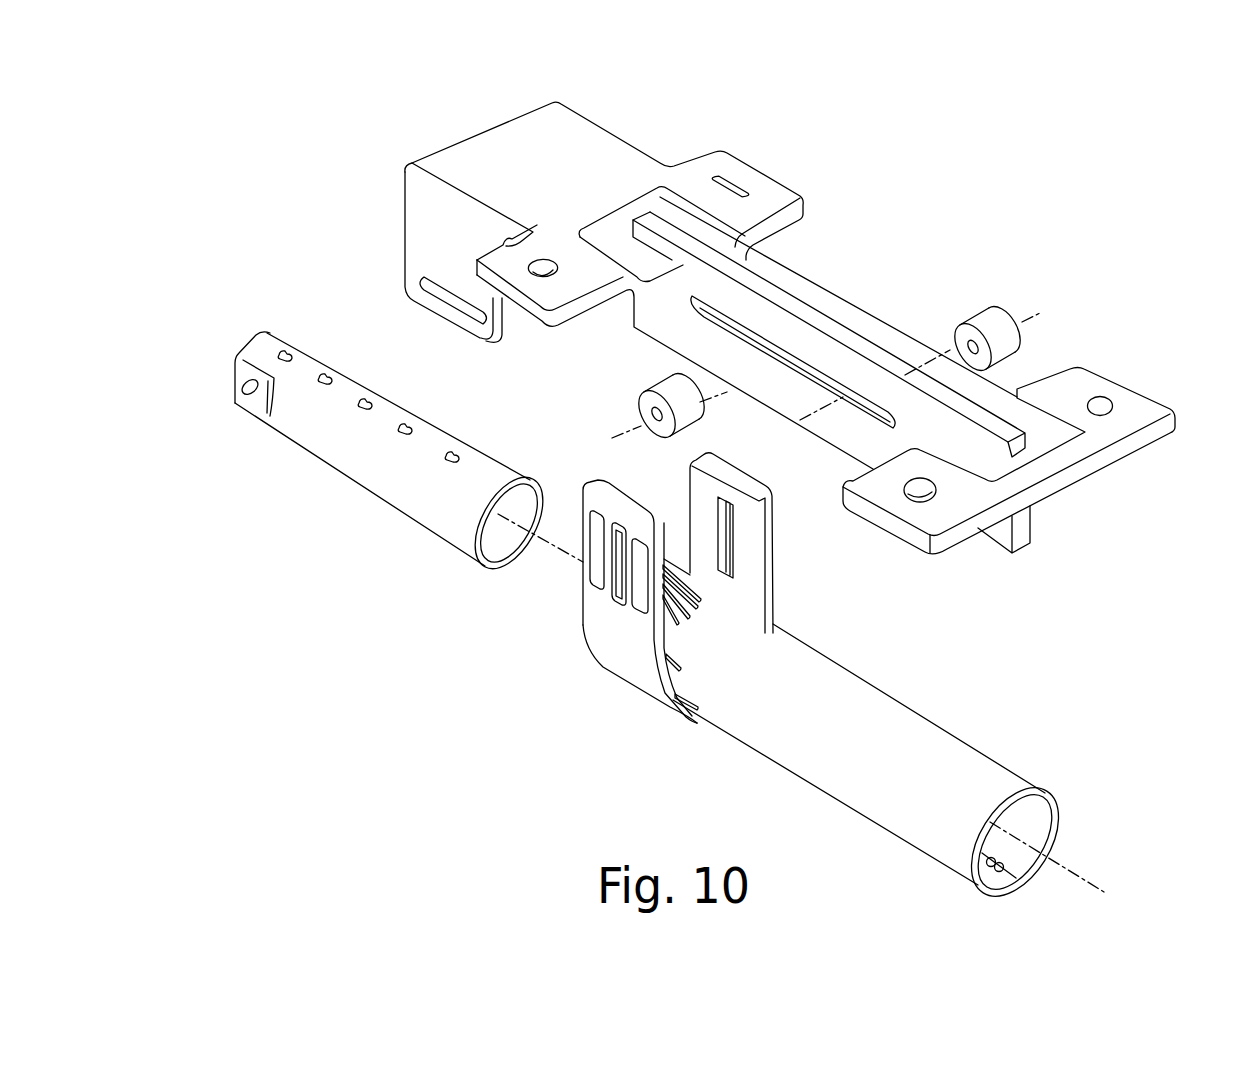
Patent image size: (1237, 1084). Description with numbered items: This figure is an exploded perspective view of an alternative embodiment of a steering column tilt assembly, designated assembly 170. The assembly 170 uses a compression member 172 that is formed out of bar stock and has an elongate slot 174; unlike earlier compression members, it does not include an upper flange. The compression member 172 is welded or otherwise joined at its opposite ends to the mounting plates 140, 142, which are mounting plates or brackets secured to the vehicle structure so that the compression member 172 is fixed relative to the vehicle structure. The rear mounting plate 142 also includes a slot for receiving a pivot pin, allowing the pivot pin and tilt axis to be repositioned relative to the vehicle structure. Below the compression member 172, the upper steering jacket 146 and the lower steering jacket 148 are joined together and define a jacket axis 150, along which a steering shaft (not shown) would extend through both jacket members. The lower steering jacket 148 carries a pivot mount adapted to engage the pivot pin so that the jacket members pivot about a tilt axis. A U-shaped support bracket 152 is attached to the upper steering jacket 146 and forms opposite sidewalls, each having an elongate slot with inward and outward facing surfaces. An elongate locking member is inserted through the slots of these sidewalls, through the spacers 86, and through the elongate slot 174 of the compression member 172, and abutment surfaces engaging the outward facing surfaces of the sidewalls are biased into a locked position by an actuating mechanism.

The alternative embodiment assembly 170 is at (877, 122).
The rear mounting plate 142 is at (486, 144).
The elongate slot 174 is at (760, 347).
The compression member 172 is at (837, 347).
The spacers 86 is at (988, 322).
The mounting plate 140 is at (1111, 440).
The lower steering jacket 148 is at (332, 450).
The U-shaped support bracket 152 is at (600, 620).
The upper steering jacket 146 is at (940, 740).
The jacket axis 150 is at (1093, 878).